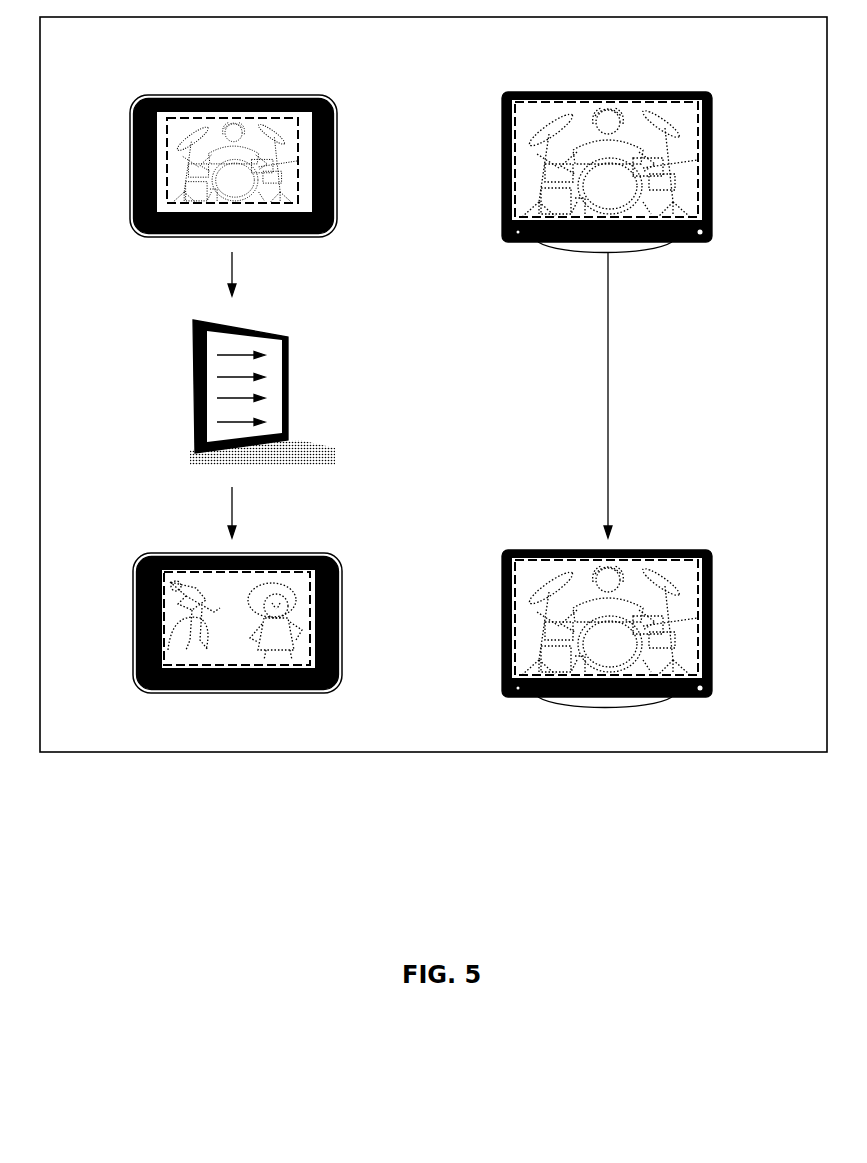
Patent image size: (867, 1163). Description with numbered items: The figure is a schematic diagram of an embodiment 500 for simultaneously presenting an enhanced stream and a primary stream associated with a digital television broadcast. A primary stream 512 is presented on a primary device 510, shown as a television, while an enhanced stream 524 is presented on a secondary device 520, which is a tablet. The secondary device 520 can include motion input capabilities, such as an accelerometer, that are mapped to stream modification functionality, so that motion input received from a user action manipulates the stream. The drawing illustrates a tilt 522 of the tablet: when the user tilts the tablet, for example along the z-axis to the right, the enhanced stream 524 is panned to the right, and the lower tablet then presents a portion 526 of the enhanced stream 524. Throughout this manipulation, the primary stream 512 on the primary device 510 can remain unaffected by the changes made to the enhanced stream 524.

The embodiment 500 is at (782, 50).
The primary device 510 is at (710, 127).
The primary stream 512 is at (699, 158).
The secondary device 520 is at (334, 146).
The tilt gesture of the mobile device 522 is at (262, 395).
The enhanced stream 524 is at (299, 178).
The portion 526 is at (313, 620).